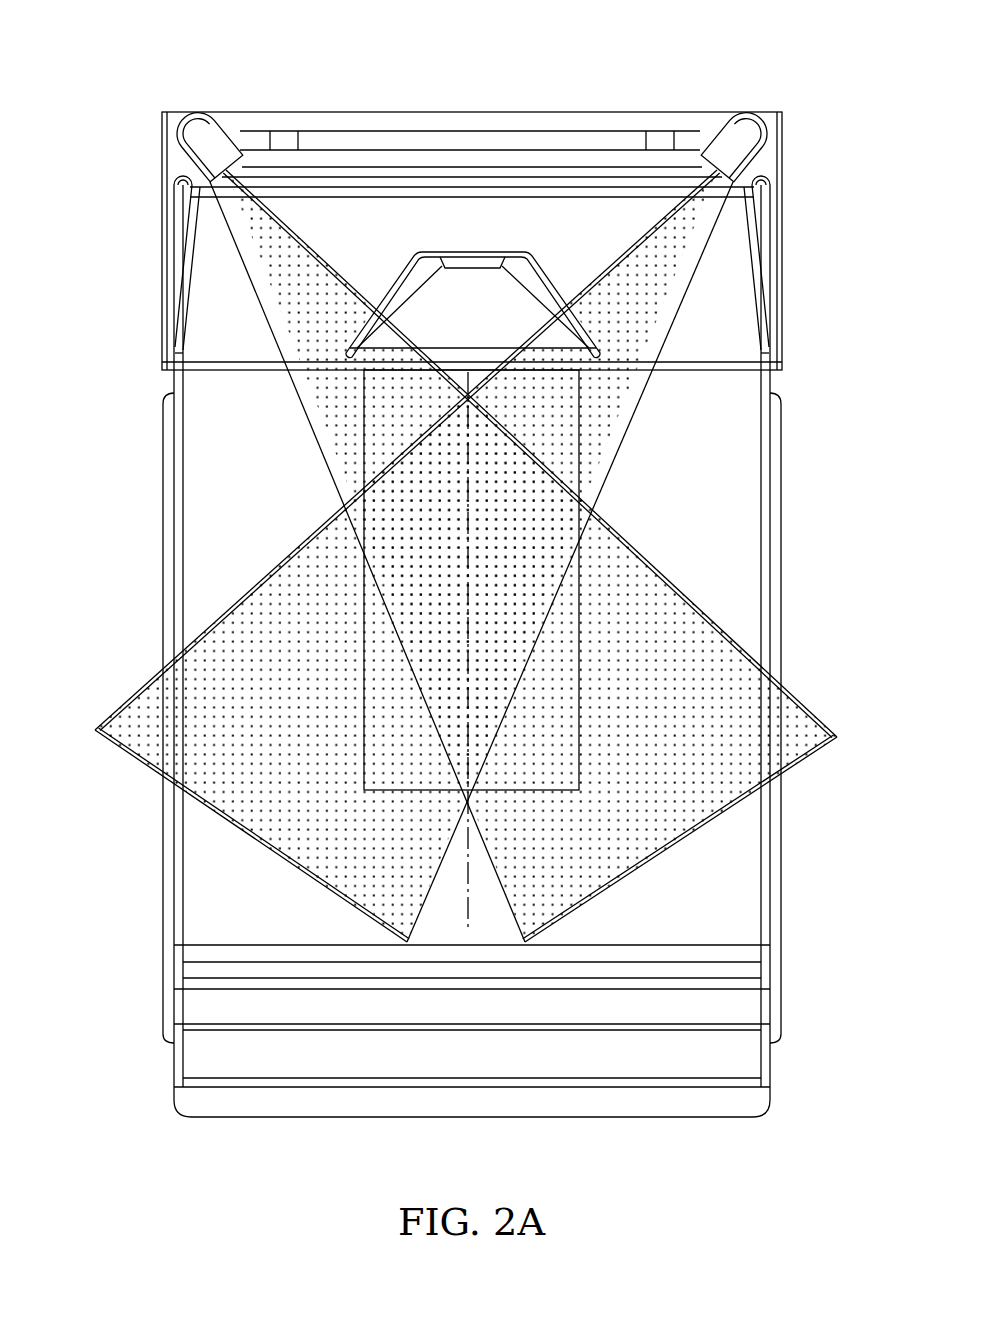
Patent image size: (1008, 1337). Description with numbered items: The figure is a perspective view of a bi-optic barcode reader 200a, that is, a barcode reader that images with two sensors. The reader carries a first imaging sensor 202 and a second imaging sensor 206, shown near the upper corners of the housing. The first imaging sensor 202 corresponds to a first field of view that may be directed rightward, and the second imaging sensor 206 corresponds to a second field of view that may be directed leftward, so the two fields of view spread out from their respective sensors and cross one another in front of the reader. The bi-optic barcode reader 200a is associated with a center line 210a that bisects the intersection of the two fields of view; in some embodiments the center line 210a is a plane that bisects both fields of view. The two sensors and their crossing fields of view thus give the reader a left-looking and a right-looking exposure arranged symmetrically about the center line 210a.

The bi-optic barcode reader 200a is at (143, 38).
The first imaging sensor 202 is at (195, 133).
The second imaging sensor 206 is at (747, 135).
The center line 210a is at (467, 527).